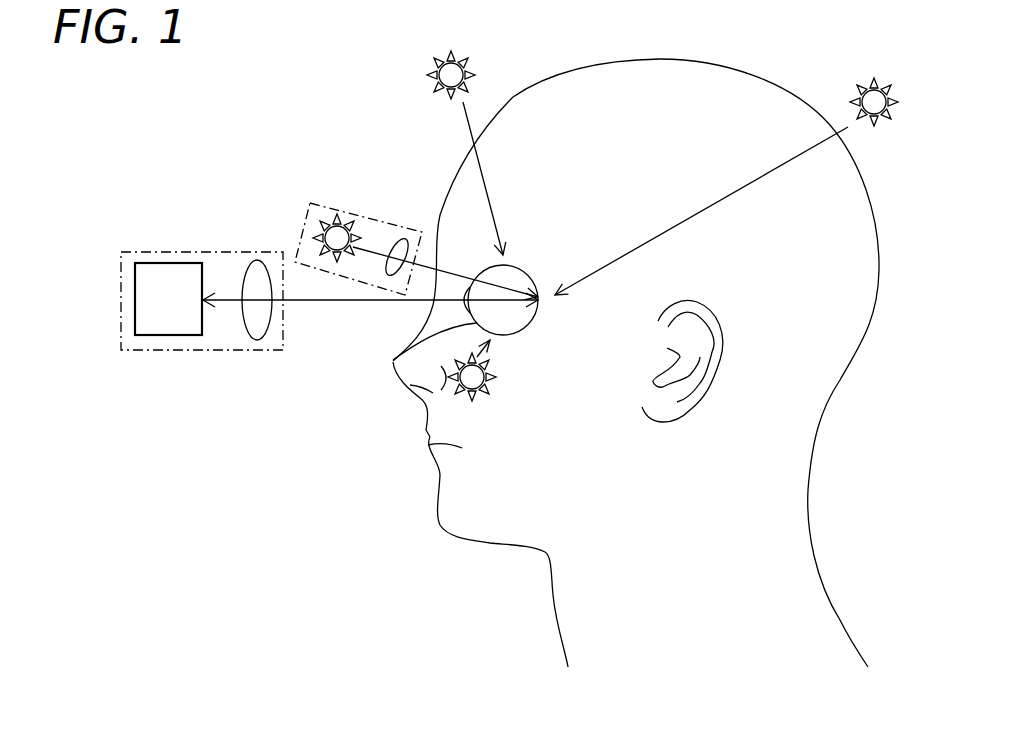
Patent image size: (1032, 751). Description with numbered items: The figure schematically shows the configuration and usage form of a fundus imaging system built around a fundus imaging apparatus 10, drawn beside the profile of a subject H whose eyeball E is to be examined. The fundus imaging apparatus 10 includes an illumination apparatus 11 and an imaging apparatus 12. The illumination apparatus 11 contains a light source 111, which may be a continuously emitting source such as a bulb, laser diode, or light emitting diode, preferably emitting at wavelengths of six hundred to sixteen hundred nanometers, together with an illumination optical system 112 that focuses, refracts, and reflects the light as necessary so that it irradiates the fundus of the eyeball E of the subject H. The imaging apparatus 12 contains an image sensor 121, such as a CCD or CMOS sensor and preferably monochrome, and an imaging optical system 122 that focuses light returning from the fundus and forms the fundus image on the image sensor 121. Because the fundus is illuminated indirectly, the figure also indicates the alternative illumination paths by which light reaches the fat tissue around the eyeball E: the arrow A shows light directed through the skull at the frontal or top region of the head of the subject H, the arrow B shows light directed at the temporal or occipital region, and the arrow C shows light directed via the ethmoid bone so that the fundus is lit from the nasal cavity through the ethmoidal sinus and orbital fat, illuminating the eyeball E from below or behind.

The fundus imaging apparatus 10 is at (435, 152).
The illumination apparatus 11 is at (414, 224).
The light source 111 is at (335, 224).
The illumination optical system 112 is at (402, 235).
The imaging apparatus 12 is at (329, 279).
The image sensor 121 is at (167, 263).
The imaging optical system 122 is at (258, 258).
The arrow A is at (468, 153).
The arrow B is at (726, 186).
The arrow C is at (477, 370).
The eyeball E is at (393, 360).
The subject H is at (868, 193).